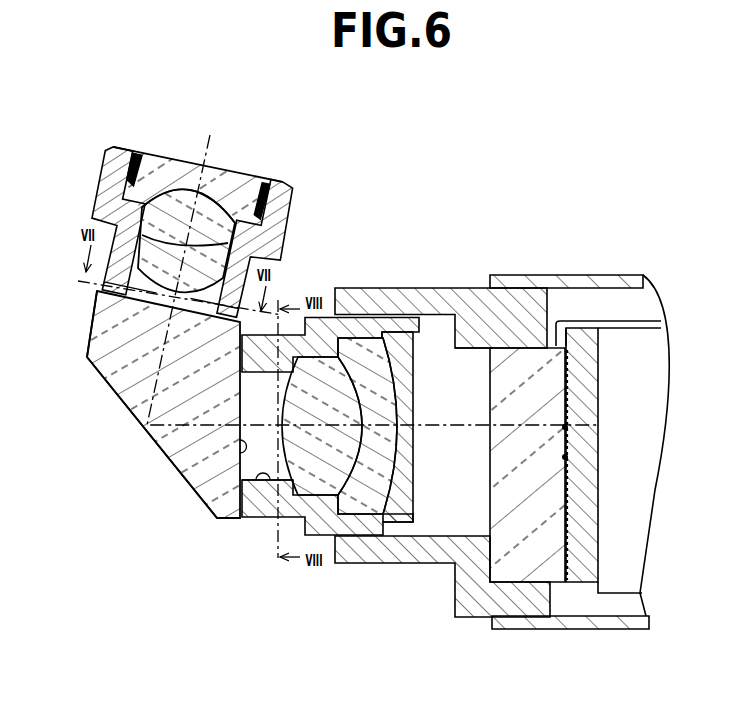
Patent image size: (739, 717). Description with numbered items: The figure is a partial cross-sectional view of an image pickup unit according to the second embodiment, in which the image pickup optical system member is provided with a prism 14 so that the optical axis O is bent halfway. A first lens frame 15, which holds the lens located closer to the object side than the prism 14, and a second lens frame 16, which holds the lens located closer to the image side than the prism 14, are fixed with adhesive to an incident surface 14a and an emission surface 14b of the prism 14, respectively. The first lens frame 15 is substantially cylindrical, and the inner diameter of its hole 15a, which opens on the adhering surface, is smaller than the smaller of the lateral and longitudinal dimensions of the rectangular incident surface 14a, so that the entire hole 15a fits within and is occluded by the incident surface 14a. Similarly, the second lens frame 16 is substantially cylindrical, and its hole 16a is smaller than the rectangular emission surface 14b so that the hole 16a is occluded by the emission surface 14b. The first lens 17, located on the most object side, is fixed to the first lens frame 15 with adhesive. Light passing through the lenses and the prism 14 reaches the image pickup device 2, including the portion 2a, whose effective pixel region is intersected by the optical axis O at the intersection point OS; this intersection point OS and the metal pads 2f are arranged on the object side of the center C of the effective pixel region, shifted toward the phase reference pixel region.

The image pickup device 2 is at (585, 577).
The housing block portion 2a is at (563, 541).
The metal pads 2f is at (557, 322).
The prism 14 is at (133, 403).
The incident surface 14a is at (88, 350).
The emission surface 14b is at (196, 465).
The first lens frame 15 is at (104, 163).
The hole 15a is at (104, 282).
The second lens frame 16 is at (270, 521).
The hole 16a is at (258, 482).
The first lens 17 is at (186, 158).
The optical axis O is at (438, 423).
The intersection point OS is at (568, 427).
The center C is at (568, 457).